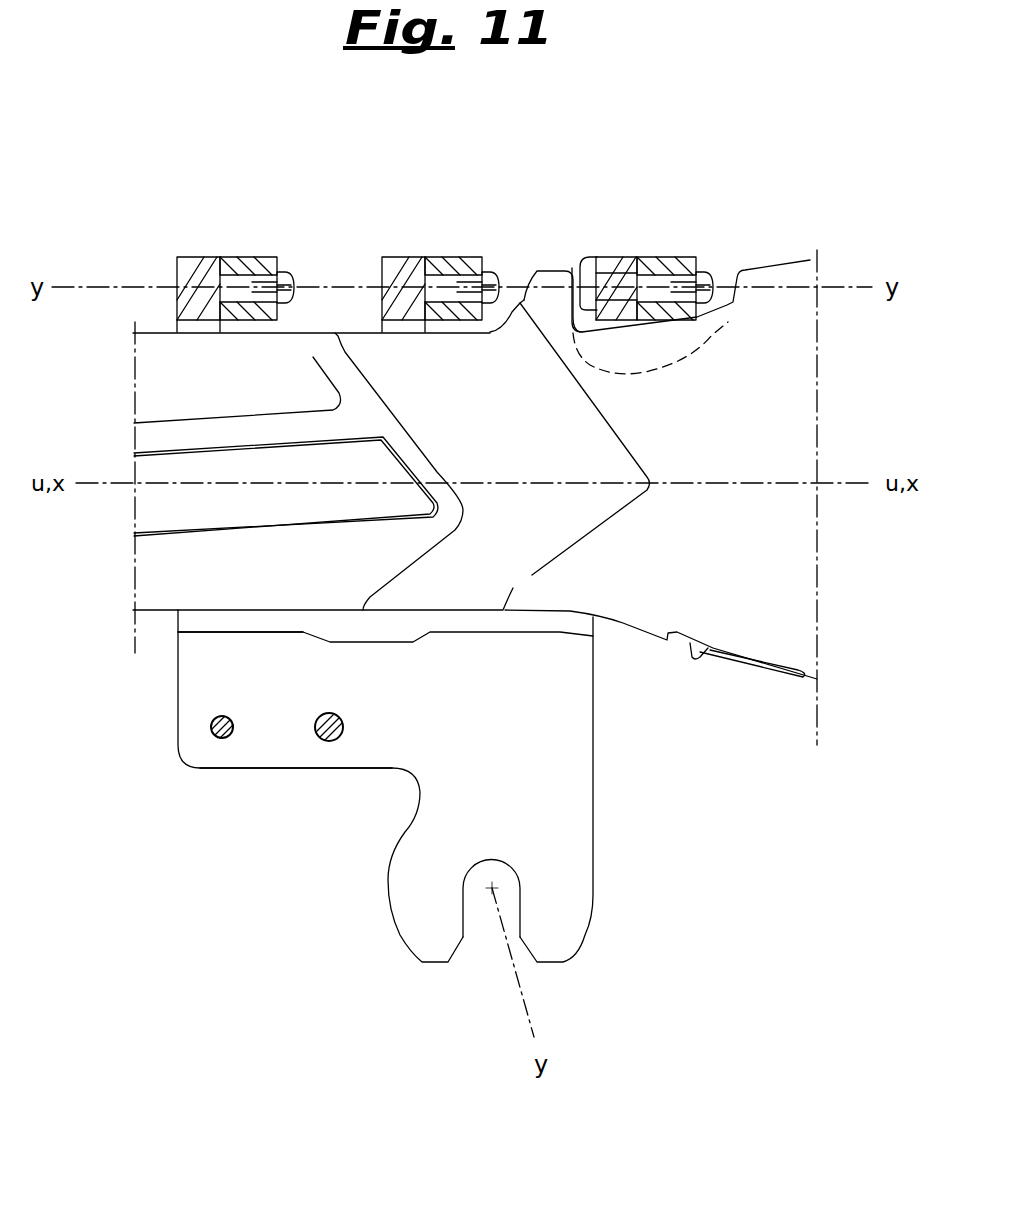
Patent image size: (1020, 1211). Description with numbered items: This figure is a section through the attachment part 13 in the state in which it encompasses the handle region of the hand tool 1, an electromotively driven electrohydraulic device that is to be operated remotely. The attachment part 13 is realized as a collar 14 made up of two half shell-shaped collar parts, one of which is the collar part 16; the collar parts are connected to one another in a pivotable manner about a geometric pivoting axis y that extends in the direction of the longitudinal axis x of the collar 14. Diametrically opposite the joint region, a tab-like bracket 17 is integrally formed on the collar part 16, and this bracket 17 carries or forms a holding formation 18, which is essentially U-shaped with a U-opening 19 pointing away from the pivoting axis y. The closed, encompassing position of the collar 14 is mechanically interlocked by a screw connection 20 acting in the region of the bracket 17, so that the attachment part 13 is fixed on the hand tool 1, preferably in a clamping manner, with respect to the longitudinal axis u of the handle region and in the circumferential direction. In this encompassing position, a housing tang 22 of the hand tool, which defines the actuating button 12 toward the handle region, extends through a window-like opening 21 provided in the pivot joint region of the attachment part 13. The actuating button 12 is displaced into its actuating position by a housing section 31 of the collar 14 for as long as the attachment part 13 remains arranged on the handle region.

The hand tool 1 is at (745, 413).
The actuating button 12 is at (648, 352).
The attachment part 13 is at (213, 228).
The collar 14 is at (178, 700).
The collar part 16 is at (258, 620).
The bracket 17 is at (302, 683).
The holding formation 18 is at (553, 911).
The U-opening 19 is at (481, 920).
The screw connection 20 is at (222, 735).
The window-like opening 21 is at (512, 292).
The housing tang 22 is at (550, 278).
The housing section 31 is at (623, 308).